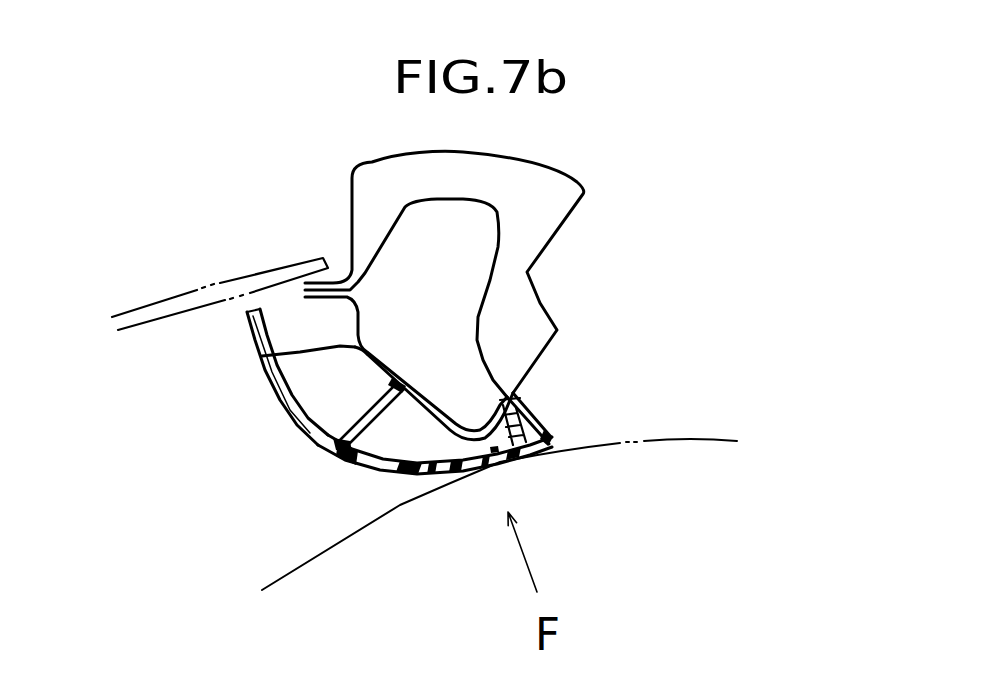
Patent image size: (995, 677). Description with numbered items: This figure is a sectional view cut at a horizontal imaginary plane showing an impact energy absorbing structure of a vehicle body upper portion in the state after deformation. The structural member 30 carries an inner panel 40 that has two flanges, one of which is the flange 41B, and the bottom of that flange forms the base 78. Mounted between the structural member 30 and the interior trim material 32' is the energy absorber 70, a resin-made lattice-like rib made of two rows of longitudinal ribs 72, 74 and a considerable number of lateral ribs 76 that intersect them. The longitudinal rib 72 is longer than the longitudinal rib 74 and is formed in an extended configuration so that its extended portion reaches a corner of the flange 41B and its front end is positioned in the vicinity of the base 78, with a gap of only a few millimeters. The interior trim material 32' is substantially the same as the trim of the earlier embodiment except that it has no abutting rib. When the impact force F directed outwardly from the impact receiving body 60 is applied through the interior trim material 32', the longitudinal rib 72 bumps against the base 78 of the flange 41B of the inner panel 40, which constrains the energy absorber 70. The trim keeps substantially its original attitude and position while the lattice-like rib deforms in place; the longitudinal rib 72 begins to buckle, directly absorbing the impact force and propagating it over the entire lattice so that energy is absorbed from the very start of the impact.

The structural member 30 is at (548, 302).
The base of flange 78 is at (530, 407).
The energy absorber 70 is at (285, 404).
The longitudinal rib 74 is at (330, 460).
The lateral ribs 76 is at (322, 375).
The longitudinal rib 72 is at (527, 462).
The flange 41B is at (553, 452).
The impact receiving body 60 is at (305, 558).
The inner panel 40 is at (458, 405).
The interior trim material 32' is at (215, 333).